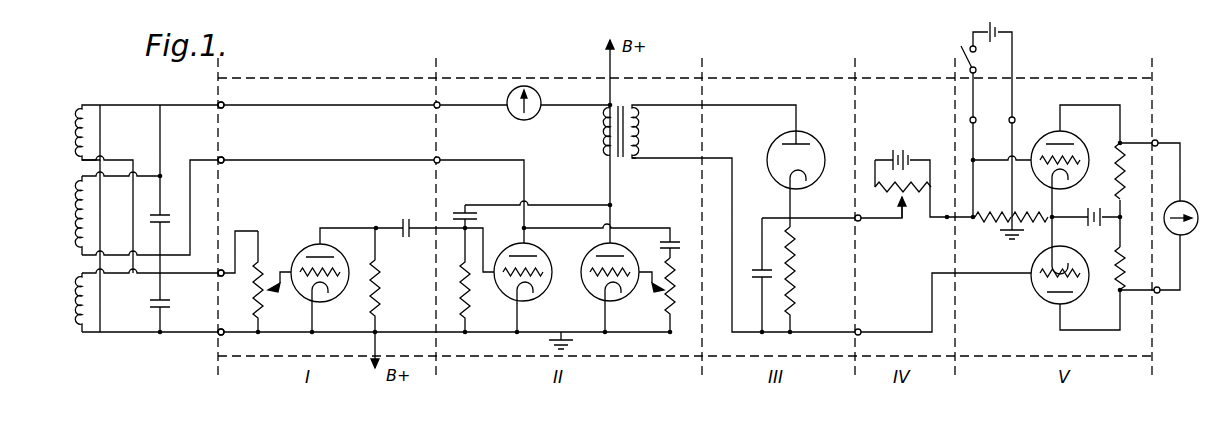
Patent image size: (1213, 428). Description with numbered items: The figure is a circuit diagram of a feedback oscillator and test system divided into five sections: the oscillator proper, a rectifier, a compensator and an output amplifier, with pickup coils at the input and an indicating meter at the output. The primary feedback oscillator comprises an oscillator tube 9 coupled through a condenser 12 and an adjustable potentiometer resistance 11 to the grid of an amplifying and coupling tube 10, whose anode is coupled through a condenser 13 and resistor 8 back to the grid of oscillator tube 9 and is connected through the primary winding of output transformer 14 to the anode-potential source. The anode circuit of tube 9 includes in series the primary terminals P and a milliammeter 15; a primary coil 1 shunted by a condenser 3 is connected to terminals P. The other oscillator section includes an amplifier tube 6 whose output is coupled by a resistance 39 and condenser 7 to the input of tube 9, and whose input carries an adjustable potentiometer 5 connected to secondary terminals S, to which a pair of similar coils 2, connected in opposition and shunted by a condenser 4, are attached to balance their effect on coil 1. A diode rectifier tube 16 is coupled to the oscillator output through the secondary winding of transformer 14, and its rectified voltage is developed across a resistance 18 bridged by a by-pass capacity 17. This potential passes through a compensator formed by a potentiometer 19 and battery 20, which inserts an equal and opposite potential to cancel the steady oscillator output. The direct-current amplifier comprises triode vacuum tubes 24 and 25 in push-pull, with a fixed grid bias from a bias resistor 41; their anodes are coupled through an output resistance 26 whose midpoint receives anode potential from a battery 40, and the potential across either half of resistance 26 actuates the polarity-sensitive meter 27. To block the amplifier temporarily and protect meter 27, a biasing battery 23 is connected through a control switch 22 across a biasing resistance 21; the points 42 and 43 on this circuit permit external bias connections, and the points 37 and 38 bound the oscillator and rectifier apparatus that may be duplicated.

The primary coil 1 is at (70, 222).
The secondary coils 2 is at (70, 139).
The condenser 3 is at (153, 216).
The condenser 4 is at (150, 304).
The adjustable potentiometer 5 is at (268, 298).
The amplifier tube 6 is at (308, 252).
The condenser 7 is at (405, 220).
The resistor 8 is at (474, 311).
The oscillator tube 9 is at (548, 262).
The amplifying and coupling tube 10 is at (590, 296).
The adjustable potentiometer resistance 11 is at (662, 305).
The condenser 12 is at (678, 234).
The condenser 13 is at (460, 212).
The output transformer 14 is at (622, 162).
The milliammeter 15 is at (537, 115).
The diode rectifier tube 16 is at (776, 142).
The by-pass capacity 17 is at (755, 293).
The resistance 18 is at (795, 290).
The potentiometer 19 is at (912, 200).
The battery 20 is at (908, 150).
The biasing resistance 21 is at (990, 212).
The control switch 22 is at (977, 56).
The biasing battery 23 is at (1004, 28).
The triode vacuum tube 24 is at (1078, 142).
The triode vacuum tube 25 is at (1040, 291).
The output resistance 26 is at (1131, 174).
The indicating meter 27 is at (1186, 204).
The points 37 is at (440, 108).
The points 38 is at (855, 222).
The resistance 39 is at (382, 297).
The battery 40 is at (1098, 221).
The bias resistor 41 is at (1028, 212).
The point 42 is at (977, 115).
The point 43 is at (1016, 116).
The primary terminals P is at (224, 108).
The secondary terminals S is at (224, 276).